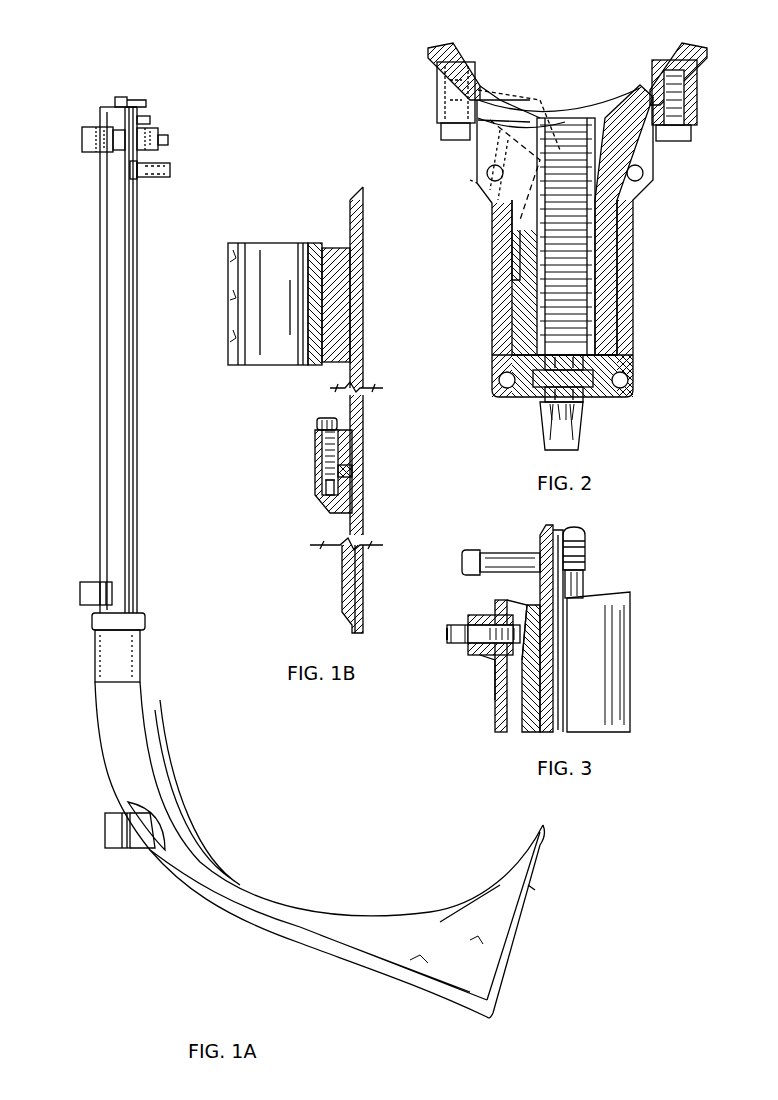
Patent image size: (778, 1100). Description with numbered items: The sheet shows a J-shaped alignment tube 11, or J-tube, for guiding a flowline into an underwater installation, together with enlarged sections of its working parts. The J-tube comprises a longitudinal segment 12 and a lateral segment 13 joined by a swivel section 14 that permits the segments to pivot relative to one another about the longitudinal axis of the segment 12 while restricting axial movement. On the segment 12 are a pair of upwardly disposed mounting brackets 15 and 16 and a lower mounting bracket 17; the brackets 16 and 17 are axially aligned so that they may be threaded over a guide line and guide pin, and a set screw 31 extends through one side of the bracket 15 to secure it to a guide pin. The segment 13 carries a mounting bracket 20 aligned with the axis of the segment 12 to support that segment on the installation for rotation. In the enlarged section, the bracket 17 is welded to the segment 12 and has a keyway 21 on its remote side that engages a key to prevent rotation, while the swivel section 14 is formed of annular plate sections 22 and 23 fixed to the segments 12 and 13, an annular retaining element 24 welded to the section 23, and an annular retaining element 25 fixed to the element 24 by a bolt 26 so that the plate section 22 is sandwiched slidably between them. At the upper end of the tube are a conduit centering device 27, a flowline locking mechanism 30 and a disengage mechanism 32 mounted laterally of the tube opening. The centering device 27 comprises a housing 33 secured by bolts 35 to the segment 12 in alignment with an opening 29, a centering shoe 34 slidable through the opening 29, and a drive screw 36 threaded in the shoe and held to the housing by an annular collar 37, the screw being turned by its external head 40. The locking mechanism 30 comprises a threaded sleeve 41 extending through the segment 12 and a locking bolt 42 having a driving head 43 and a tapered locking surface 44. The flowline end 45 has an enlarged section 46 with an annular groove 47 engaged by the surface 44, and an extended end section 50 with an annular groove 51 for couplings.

In FIG. 1A, the J-shaped alignment tube 11 is at (92, 525).
In FIG. 1A, the longitudinal segment 12 is at (100, 414).
In FIG. 1B, the longitudinal segment 12 is at (356, 232).
In FIG. 2, the longitudinal segment 12 is at (437, 62).
In FIG. 3, the longitudinal segment 12 is at (495, 706).
In FIG. 1A, the lateral segment 13 is at (165, 796).
In FIG. 1B, the lateral segment 13 is at (357, 597).
In FIG. 1A, the swivel section 14 is at (86, 651).
In FIG. 1B, the swivel section 14 is at (303, 490).
In FIG. 1A, the mounting bracket 15 is at (160, 146).
In FIG. 1A, the mounting bracket 16 is at (82, 140).
In FIG. 1A, the lower mounting bracket 17 is at (80, 593).
In FIG. 1B, the lower mounting bracket 17 is at (322, 245).
In FIG. 1A, the mounting bracket 20 is at (105, 830).
In FIG. 1B, the keyway 21 is at (228, 275).
In FIG. 1B, the annular plate section 22 is at (350, 475).
In FIG. 1B, the annular plate section 23 is at (343, 582).
In FIG. 1B, the annular retaining element 24 is at (315, 463).
In FIG. 1B, the annular retaining element 25 is at (318, 436).
In FIG. 1B, the bolt 26 is at (323, 418).
In FIG. 1A, the conduit centering device 27 is at (170, 170).
In FIG. 2, the conduit centering device 27 is at (650, 241).
In FIG. 2, the opening 29 is at (530, 108).
In FIG. 1A, the flowline locking mechanism 30 is at (150, 120).
In FIG. 3, the flowline locking mechanism 30 is at (486, 668).
In FIG. 1A, the set screw 31 is at (172, 133).
In FIG. 1A, the disengage mechanism 32 is at (137, 104).
In FIG. 3, the disengage mechanism 32 is at (508, 556).
In FIG. 2, the housing 33 is at (653, 168).
In FIG. 2, the centering shoe 34 is at (655, 70).
In FIG. 2, the bolts 35 is at (446, 136).
In FIG. 2, the drive screw 36 is at (580, 120).
In FIG. 2, the annular collar 37 is at (533, 382).
In FIG. 2, the head 40 is at (583, 432).
In FIG. 3, the threaded sleeve 41 is at (475, 615).
In FIG. 3, the locking bolt 42 is at (460, 656).
In FIG. 3, the driving head 43 is at (447, 633).
In FIG. 3, the tapered locking surface 44 is at (548, 640).
In FIG. 3, the flowline end 45 is at (602, 589).
In FIG. 3, the enlarged section 46 is at (550, 690).
In FIG. 3, the annular groove 47 is at (548, 665).
In FIG. 3, the extended end section 50 is at (585, 532).
In FIG. 3, the annular groove 51 is at (585, 555).